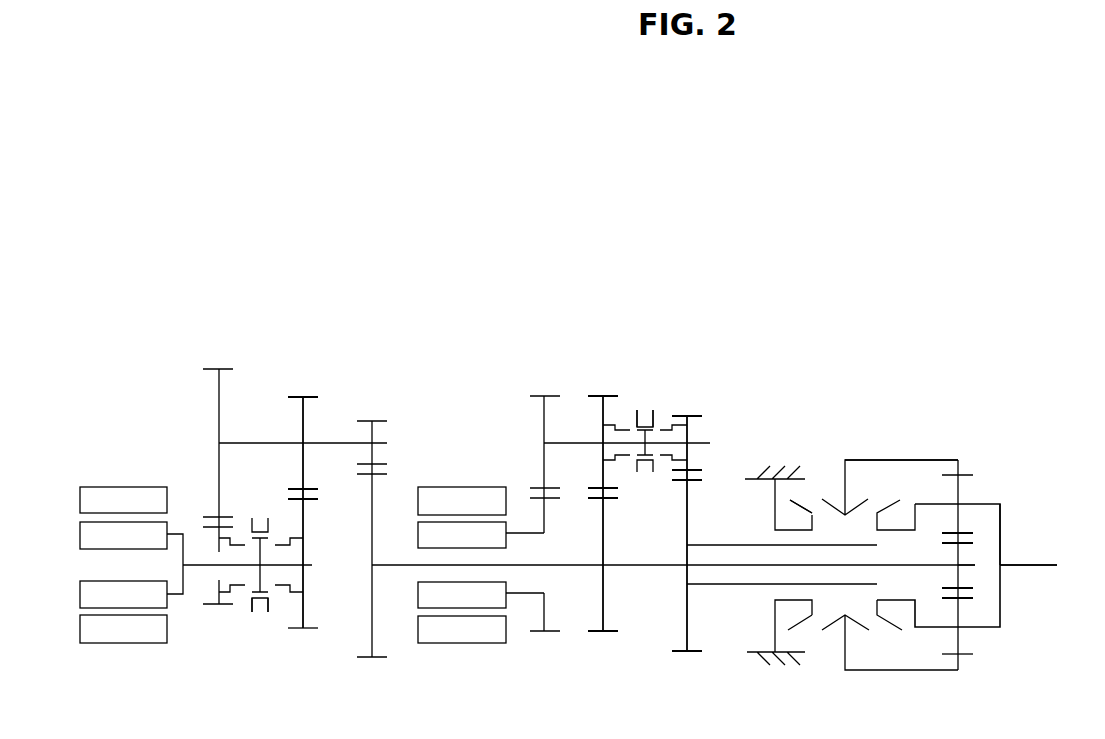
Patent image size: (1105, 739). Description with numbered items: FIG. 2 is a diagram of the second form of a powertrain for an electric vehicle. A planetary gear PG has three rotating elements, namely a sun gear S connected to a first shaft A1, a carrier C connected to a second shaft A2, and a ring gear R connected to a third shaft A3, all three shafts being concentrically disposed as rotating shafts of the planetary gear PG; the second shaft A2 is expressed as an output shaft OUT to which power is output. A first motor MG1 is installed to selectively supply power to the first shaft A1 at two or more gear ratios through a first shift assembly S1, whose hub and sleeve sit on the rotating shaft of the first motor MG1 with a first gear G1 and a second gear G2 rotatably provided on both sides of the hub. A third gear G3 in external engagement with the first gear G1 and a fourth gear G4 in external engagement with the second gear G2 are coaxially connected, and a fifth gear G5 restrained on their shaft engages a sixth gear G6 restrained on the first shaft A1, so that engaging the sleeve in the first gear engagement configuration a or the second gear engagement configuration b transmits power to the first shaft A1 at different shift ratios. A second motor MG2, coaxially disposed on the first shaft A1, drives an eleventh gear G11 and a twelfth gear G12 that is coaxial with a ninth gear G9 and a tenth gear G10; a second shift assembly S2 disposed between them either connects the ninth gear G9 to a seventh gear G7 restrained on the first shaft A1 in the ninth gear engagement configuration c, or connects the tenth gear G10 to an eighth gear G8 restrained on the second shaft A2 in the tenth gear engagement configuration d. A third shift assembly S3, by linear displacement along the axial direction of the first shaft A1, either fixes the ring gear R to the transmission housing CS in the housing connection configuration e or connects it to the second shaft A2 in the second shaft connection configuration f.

The first motor MG1 is at (131, 554).
The second motor MG2 is at (481, 554).
The first gear G1 is at (215, 604).
The second gear G2 is at (303, 628).
The third gear G3 is at (219, 369).
The fourth gear G4 is at (303, 397).
The fifth gear G5 is at (372, 421).
The sixth gear G6 is at (374, 657).
The seventh gear G7 is at (601, 631).
The eighth gear G8 is at (684, 651).
The ninth gear G9 is at (603, 396).
The tenth gear G10 is at (687, 416).
The eleventh gear G11 is at (542, 631).
The twelfth gear G12 is at (544, 396).
The first shift assembly S1 is at (260, 614).
The second shift assembly S2 is at (645, 410).
The third shift assembly S3 is at (834, 500).
The first gear engagement configuration a is at (245, 612).
The second gear engagement configuration b is at (272, 612).
The ninth gear engagement configuration c is at (630, 415).
The tenth gear engagement configuration d is at (660, 415).
The housing connection configuration e is at (808, 500).
The second shaft connection configuration f is at (887, 500).
The transmission housing CS is at (780, 475).
The planetary gear PG is at (967, 660).
The sun gear S is at (968, 538).
The ring gear R is at (967, 475).
The carrier C is at (980, 504).
The first shaft A1 is at (968, 565).
The second shaft A2 is at (995, 504).
The third shaft A3 is at (912, 460).
The output shaft OUT is at (1045, 565).